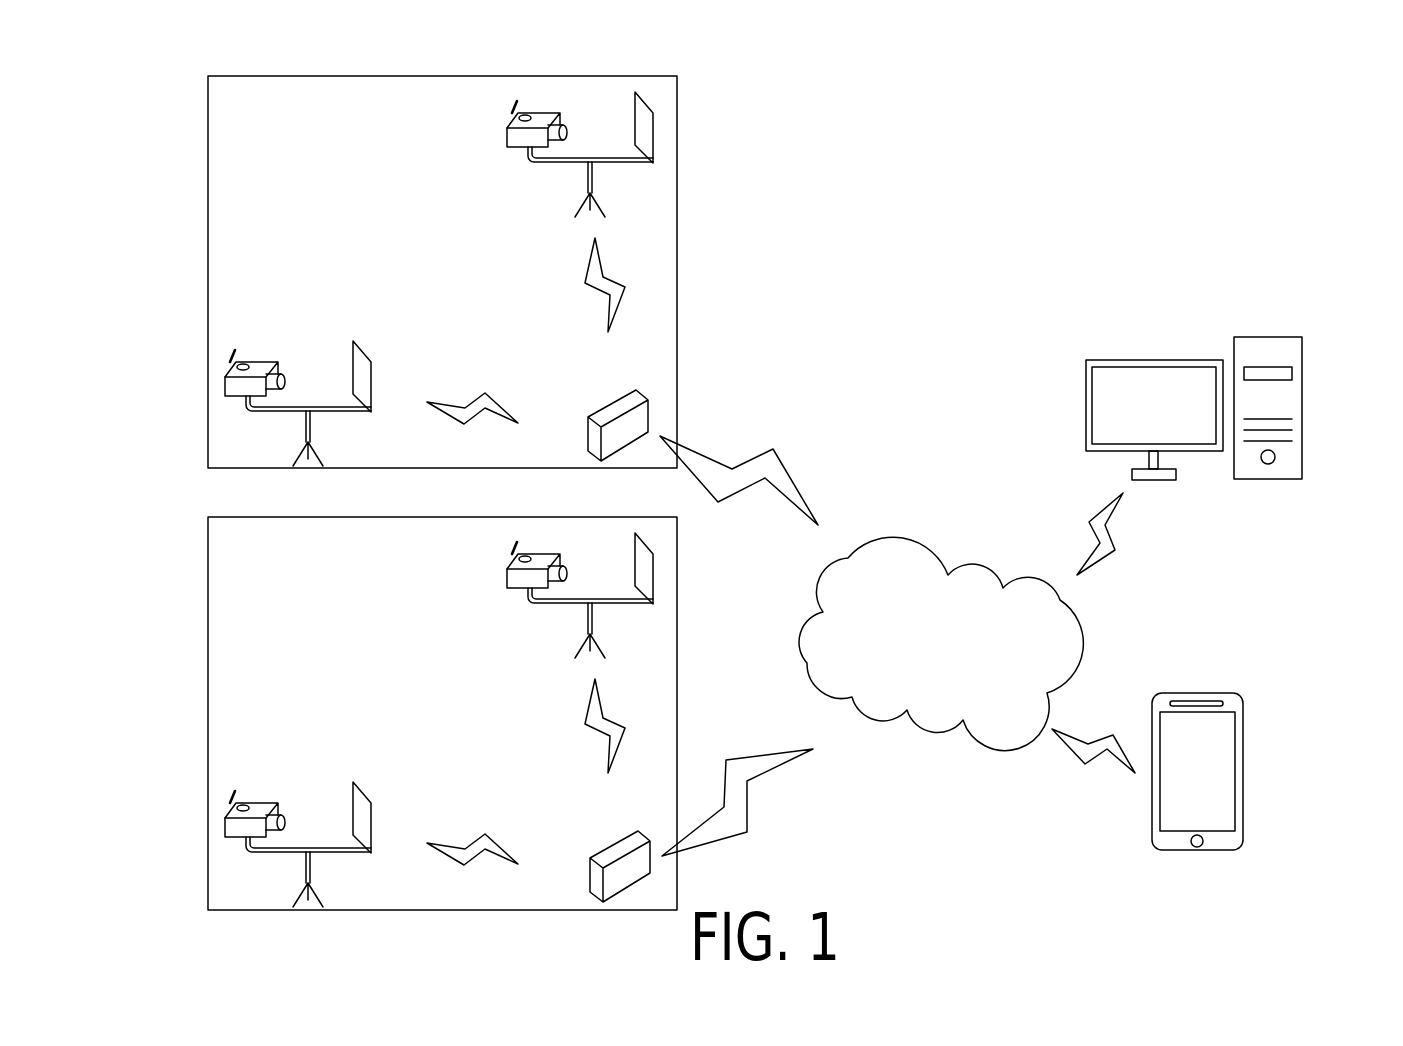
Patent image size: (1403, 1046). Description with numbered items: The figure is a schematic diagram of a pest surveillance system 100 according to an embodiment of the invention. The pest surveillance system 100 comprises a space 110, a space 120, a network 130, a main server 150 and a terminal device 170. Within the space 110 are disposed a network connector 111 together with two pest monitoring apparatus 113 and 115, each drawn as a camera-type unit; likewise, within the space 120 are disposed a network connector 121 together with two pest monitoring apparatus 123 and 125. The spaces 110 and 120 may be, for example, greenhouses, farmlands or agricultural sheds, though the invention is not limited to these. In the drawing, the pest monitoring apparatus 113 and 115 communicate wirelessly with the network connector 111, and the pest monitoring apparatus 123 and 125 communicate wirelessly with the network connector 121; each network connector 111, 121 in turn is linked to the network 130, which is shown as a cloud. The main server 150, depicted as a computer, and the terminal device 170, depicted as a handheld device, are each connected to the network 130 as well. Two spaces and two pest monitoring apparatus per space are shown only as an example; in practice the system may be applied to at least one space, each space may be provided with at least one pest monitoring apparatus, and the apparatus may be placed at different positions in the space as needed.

The pest surveillance system 100 is at (1393, 906).
The space 110 is at (208, 245).
The network connector 111 is at (637, 415).
The pest monitoring apparatus 113 is at (515, 135).
The pest monitoring apparatus 115 is at (238, 392).
The space 120 is at (208, 719).
The network connector 121 is at (597, 877).
The pest monitoring apparatus 123 is at (515, 576).
The pest monitoring apparatus 125 is at (238, 833).
The network 130 is at (914, 542).
The main server 150 is at (1254, 338).
The terminal device 170 is at (1243, 750).